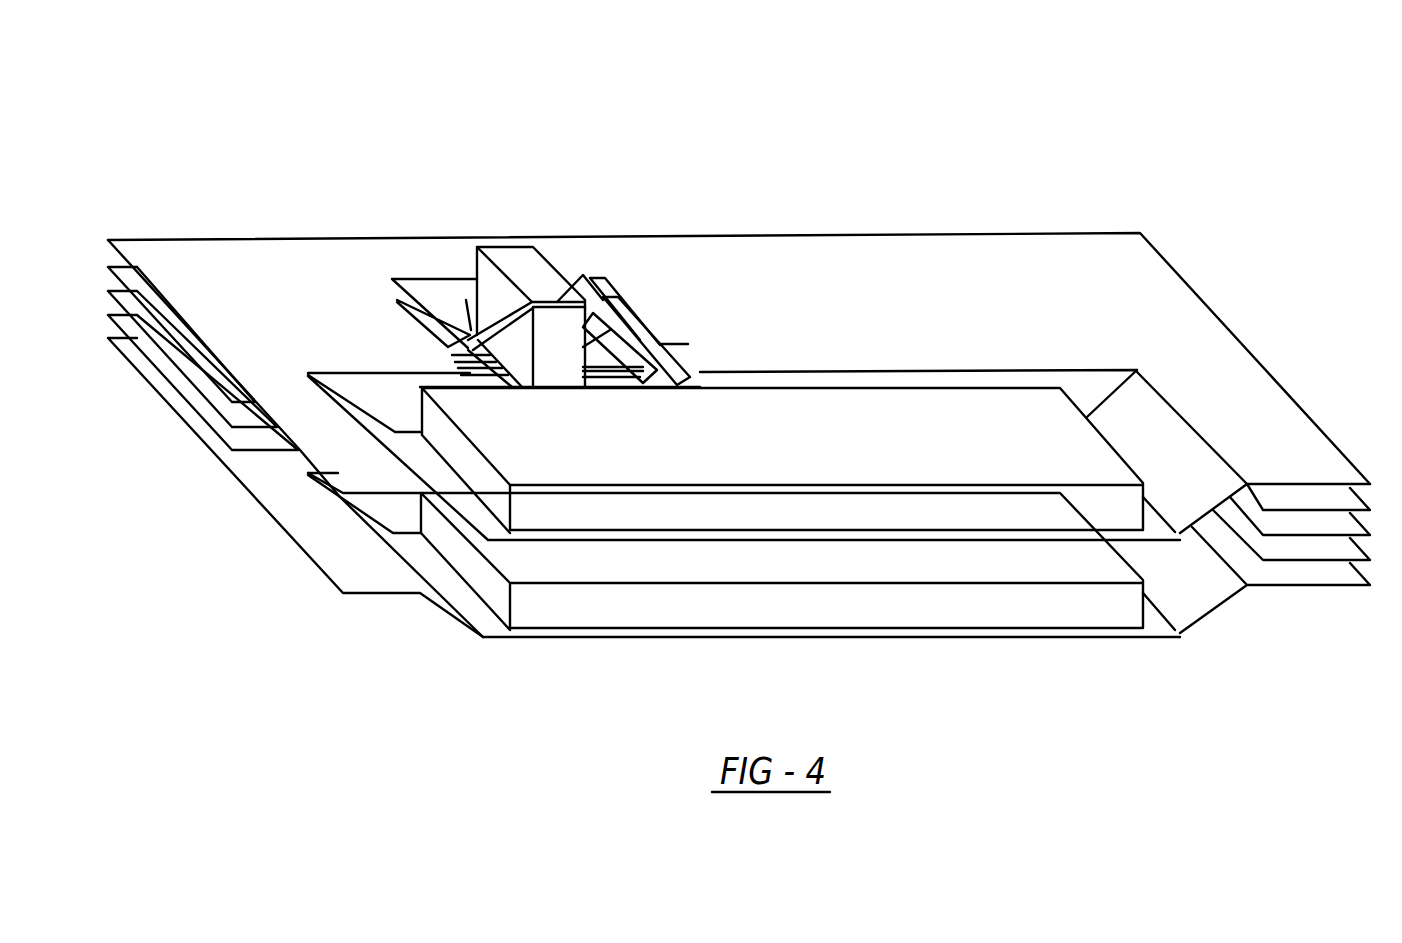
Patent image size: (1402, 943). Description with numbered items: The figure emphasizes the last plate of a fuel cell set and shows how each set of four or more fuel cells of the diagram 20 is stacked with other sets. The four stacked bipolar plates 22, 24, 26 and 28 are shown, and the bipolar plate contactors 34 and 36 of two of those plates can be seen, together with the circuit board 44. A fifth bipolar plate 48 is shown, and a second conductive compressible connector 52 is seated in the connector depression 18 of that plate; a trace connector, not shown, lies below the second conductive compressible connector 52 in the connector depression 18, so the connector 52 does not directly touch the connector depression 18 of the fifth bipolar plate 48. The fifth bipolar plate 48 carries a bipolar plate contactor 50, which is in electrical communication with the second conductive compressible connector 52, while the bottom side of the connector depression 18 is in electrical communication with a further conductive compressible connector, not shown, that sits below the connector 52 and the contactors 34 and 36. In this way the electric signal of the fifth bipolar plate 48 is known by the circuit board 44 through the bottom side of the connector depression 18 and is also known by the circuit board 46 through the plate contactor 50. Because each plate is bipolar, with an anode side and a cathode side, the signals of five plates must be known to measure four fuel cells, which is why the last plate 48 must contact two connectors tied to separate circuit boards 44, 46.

The connector depression 18 is at (471, 342).
The diagram 20 is at (1014, 128).
The bipolar plate 22 is at (225, 465).
The bipolar plate 24 is at (199, 412).
The bipolar plate 26 is at (176, 367).
The bipolar plate 28 is at (148, 305).
The bipolar plate contactor 34 is at (660, 344).
The bipolar plate contactor 36 is at (470, 340).
The circuit board 44 is at (570, 612).
The circuit board 46 is at (987, 512).
The fifth bipolar plate 48 is at (108, 241).
The bipolar plate contactor 50 is at (557, 305).
The second conductive compressible connector 52 is at (508, 255).